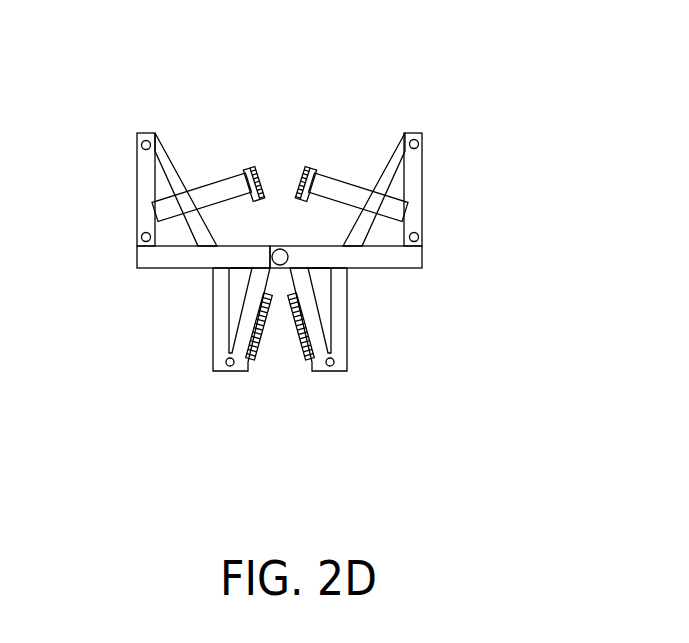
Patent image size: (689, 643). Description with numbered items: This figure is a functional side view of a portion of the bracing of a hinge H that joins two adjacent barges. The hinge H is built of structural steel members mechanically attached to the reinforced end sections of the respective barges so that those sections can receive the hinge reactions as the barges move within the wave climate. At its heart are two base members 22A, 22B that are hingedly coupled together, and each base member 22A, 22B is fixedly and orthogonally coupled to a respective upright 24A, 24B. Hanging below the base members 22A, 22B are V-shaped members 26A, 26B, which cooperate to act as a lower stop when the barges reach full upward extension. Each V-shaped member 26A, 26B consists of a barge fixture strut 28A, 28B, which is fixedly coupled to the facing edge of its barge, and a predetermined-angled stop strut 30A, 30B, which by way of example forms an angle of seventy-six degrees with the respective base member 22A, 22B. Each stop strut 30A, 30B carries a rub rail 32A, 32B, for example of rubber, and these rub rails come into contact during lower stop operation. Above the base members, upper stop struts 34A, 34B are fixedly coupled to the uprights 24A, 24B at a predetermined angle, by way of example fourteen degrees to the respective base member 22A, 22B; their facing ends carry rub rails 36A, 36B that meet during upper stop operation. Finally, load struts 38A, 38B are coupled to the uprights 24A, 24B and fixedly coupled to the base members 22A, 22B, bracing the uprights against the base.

The hinge H is at (490, 147).
The base member 22A is at (180, 257).
The base member 22B is at (385, 257).
The upright 24A is at (137, 158).
The upright 24B is at (422, 180).
The V-shaped member 26A is at (178, 368).
The V-shaped member 26B is at (384, 368).
The barge fixture strut 28A is at (213, 327).
The barge fixture strut 28B is at (348, 323).
The predetermined-angled stop strut 30A is at (242, 358).
The predetermined-angled stop strut 30B is at (315, 358).
The rub rail 32A is at (253, 357).
The rub rail 32B is at (300, 350).
The upper stop strut 34A is at (209, 174).
The upper stop strut 34B is at (336, 169).
The rub rail 36A is at (257, 166).
The rub rail 36B is at (302, 166).
The load strut 38A is at (173, 140).
The load strut 38B is at (385, 150).